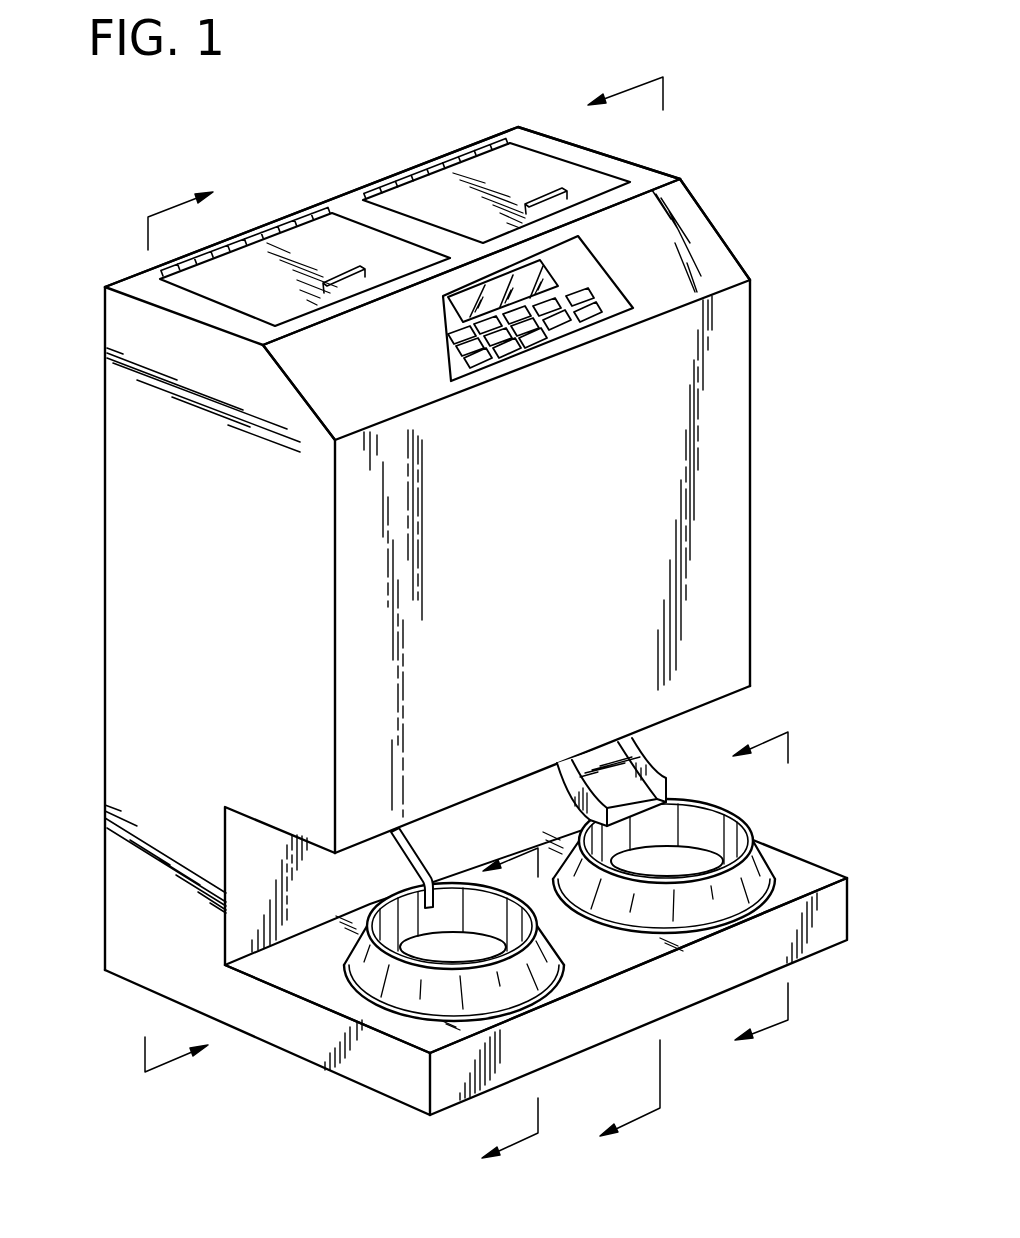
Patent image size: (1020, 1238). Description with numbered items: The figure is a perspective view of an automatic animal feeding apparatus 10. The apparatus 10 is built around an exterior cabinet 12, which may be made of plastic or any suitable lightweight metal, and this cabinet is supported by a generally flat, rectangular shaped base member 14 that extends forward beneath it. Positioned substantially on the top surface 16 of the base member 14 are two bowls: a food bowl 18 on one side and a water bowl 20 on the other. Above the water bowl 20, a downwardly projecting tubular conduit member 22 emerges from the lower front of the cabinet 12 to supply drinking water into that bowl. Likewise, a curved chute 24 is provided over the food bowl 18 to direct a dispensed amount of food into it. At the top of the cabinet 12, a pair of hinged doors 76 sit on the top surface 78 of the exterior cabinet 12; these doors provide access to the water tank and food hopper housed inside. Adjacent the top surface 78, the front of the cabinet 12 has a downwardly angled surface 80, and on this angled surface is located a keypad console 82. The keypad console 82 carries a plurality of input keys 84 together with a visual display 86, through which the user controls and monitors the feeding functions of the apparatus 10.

The automatic animal feeding apparatus 10 is at (851, 146).
The exterior cabinet 12 is at (122, 507).
The base member 14 is at (308, 1038).
The top surface 16 is at (817, 877).
The food bowl 18 is at (750, 878).
The water bowl 20 is at (395, 988).
The tubular conduit member 22 is at (420, 853).
The curved chute 24 is at (566, 781).
The hinged doors 76 is at (417, 192).
The top surface 78 is at (535, 133).
The downwardly angled surface 80 is at (732, 268).
The keypad console 82 is at (593, 263).
The input keys 84 is at (452, 340).
The visual display 86 is at (462, 303).